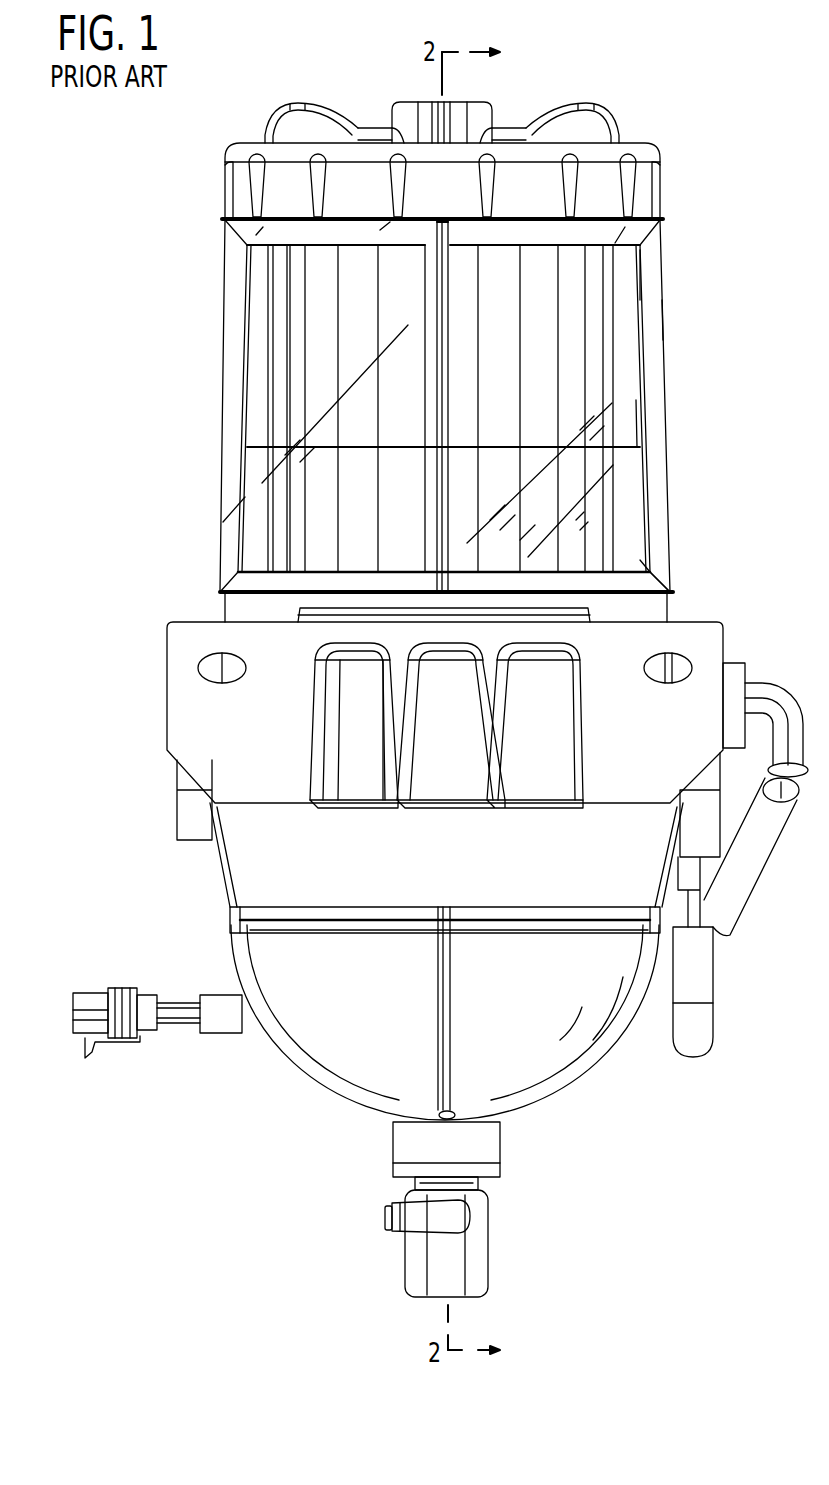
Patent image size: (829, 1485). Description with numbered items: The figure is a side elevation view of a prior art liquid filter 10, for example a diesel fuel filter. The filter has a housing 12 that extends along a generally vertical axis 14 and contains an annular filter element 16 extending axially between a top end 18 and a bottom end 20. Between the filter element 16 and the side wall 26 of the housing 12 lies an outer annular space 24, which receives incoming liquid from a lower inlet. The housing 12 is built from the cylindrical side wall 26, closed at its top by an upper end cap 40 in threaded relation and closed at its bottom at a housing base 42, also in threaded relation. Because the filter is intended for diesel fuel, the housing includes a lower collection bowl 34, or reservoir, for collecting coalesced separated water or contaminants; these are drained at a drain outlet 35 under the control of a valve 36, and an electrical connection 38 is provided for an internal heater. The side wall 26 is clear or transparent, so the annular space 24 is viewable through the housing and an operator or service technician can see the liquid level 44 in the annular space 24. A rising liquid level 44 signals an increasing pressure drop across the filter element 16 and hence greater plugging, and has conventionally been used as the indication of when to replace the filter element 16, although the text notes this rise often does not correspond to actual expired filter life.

The liquid filter 10 is at (120, 278).
The housing 12 is at (215, 405).
The vertical axis 14 is at (440, 90).
The annular filter element 16 is at (596, 375).
The top end 18 is at (640, 238).
The bottom end 20 is at (666, 580).
The outer annular space 24 is at (630, 296).
The side wall 26 is at (663, 318).
The lower collection bowl 34 is at (342, 1100).
The drain outlet 35 is at (468, 1296).
The valve 36 is at (385, 1218).
The electrical connection 38 is at (92, 993).
The upper end cap 40 is at (646, 148).
The housing base 42 is at (180, 645).
The liquid level 44 is at (632, 449).